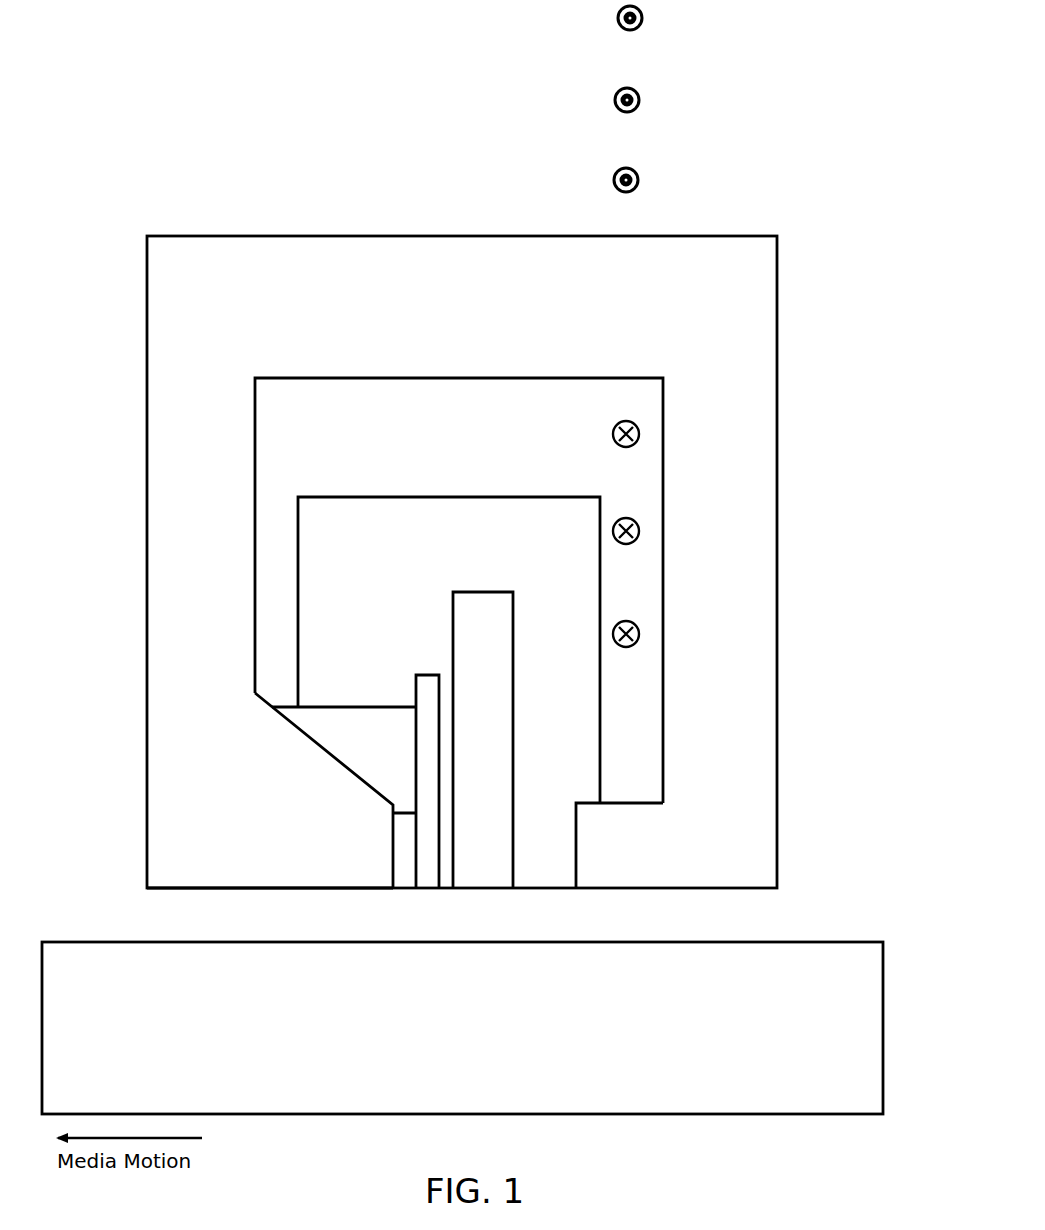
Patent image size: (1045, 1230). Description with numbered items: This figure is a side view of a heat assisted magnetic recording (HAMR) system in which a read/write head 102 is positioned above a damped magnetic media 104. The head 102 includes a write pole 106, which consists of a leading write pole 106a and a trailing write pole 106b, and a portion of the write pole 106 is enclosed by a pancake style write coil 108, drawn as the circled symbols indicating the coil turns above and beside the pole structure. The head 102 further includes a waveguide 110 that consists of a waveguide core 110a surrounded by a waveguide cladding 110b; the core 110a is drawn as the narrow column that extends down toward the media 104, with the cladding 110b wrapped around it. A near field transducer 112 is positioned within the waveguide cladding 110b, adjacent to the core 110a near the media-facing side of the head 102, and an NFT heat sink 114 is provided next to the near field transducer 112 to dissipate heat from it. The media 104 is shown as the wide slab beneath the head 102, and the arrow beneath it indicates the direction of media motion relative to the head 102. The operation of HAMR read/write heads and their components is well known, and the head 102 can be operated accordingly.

The read/write head 102 is at (203, 188).
The damped magnetic media 104 is at (462, 1028).
The write pole 106 is at (341, 253).
The leading write pole 106a is at (646, 845).
The trailing write pole 106b is at (270, 858).
The pancake style write coil 108 is at (643, 18).
The waveguide 110 is at (472, 491).
The waveguide core 110a is at (485, 740).
The waveguide cladding 110b is at (400, 852).
The near field transducer 112 is at (431, 884).
The NFT heat sink 114 is at (344, 760).